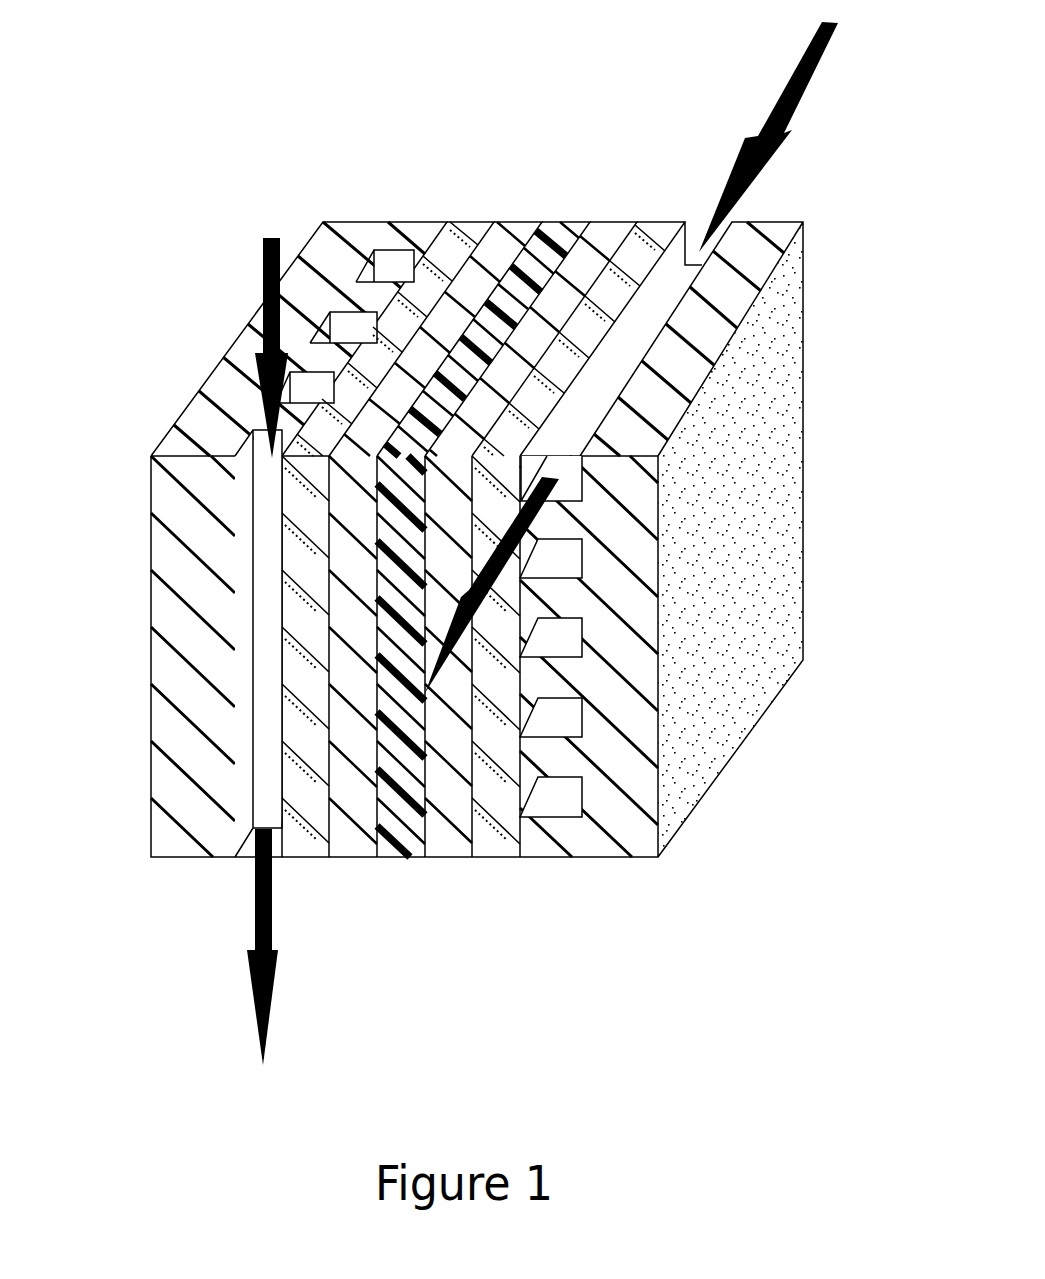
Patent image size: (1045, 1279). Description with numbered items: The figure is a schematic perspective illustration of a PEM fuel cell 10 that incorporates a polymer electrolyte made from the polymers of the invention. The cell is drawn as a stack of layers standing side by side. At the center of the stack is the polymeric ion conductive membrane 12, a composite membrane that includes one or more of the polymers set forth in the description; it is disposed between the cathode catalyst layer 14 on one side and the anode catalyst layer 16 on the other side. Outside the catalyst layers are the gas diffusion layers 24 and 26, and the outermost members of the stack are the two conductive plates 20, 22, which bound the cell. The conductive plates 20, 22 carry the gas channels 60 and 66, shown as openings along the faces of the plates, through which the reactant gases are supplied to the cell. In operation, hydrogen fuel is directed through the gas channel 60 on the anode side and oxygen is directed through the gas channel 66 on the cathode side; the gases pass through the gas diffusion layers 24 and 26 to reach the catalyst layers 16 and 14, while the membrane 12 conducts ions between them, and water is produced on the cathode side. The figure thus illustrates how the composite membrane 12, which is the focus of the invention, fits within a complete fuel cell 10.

The PEM fuel cell 10 is at (218, 170).
The polymeric ion conductive membrane 12 is at (558, 232).
The cathode catalyst layer 14 is at (598, 242).
The anode catalyst layer 16 is at (515, 237).
The conductive plate 20 is at (782, 355).
The conductive plate 22 is at (203, 438).
The gas diffusion layer 24 is at (458, 232).
The gas diffusion layer 26 is at (660, 257).
The gas channel 60 is at (390, 265).
The gas channel 66 is at (540, 720).